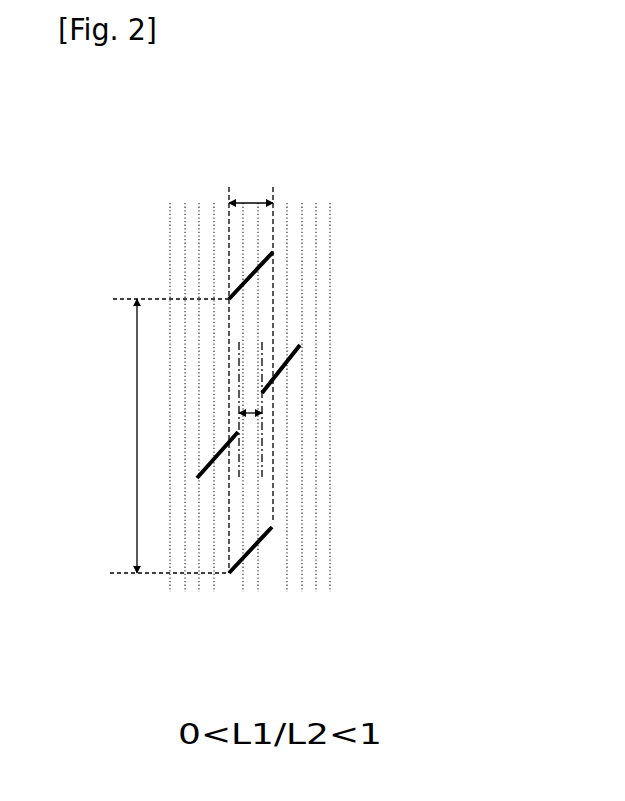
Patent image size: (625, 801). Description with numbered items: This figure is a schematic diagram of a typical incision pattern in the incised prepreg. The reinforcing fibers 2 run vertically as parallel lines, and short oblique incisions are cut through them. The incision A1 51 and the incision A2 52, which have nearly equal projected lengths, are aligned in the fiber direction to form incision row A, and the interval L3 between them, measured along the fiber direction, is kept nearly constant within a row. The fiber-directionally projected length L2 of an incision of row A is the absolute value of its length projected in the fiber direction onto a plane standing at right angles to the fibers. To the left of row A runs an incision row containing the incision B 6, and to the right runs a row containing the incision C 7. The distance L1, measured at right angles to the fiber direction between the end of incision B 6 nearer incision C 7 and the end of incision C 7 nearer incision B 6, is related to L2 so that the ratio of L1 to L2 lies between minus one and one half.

The reinforcing fiber 2 is at (317, 222).
The incision A1 51 is at (252, 265).
The incision A2 52 is at (250, 557).
The incision B 6 is at (222, 447).
The incision C 7 is at (287, 347).
The distance between incision rows L1 is at (250, 420).
The fiber-directionally projected length L2 is at (251, 181).
The incision interval L3 is at (108, 436).